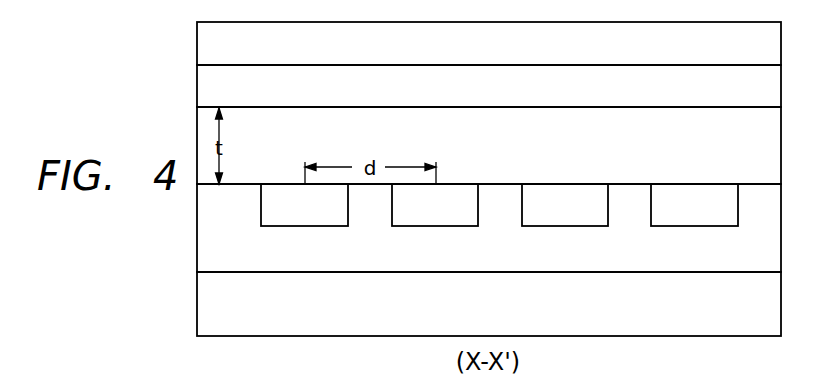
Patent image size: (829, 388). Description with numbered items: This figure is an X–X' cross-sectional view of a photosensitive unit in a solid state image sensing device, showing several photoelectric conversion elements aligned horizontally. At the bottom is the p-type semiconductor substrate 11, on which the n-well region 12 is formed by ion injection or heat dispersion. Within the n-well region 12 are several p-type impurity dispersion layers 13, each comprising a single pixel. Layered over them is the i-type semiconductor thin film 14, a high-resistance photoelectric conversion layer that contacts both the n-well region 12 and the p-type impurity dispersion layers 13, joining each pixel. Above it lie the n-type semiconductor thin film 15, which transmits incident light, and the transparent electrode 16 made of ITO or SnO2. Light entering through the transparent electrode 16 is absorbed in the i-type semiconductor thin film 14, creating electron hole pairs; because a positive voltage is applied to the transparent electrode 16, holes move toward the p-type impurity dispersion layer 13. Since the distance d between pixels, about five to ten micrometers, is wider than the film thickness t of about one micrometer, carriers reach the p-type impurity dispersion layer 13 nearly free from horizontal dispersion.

The p-type semiconductor substrate 11 is at (476, 315).
The n-well region 12 is at (476, 258).
The p-type impurity dispersion layer 13 is at (291, 218).
The i-type semiconductor thin film 14 is at (476, 156).
The n-type semiconductor thin film 15 is at (476, 98).
The transparent electrode 16 is at (476, 55).